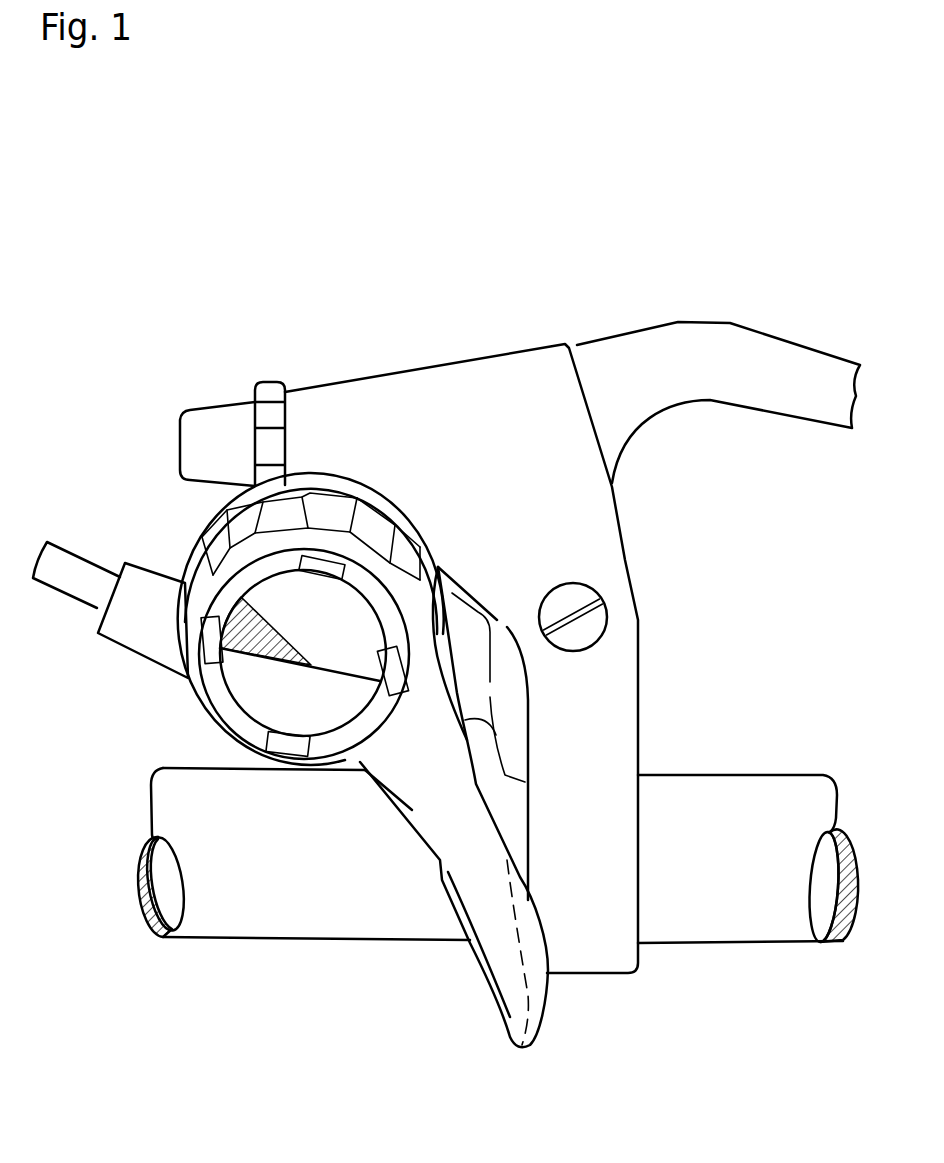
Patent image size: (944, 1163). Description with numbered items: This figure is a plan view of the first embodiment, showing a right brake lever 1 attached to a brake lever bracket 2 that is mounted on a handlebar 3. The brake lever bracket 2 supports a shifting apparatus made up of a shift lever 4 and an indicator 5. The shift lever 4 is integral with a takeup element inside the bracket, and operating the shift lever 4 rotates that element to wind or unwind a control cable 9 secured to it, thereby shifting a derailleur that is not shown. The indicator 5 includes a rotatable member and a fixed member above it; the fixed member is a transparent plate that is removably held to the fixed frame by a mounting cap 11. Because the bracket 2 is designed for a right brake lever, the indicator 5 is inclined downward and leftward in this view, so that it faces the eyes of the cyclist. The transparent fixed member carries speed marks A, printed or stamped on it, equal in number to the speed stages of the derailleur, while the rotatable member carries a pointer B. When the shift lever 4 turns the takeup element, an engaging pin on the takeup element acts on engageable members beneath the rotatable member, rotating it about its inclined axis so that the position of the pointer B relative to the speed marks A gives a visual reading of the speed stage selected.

The right brake lever 1 is at (696, 326).
The brake lever bracket 2 is at (633, 620).
The handlebar 3 is at (755, 937).
The shift lever 4 is at (500, 1012).
The indicator 5 is at (250, 688).
The control cable 9 is at (77, 592).
The mounting cap 11 is at (288, 768).
The speed marks A is at (327, 562).
The pointer B is at (238, 598).